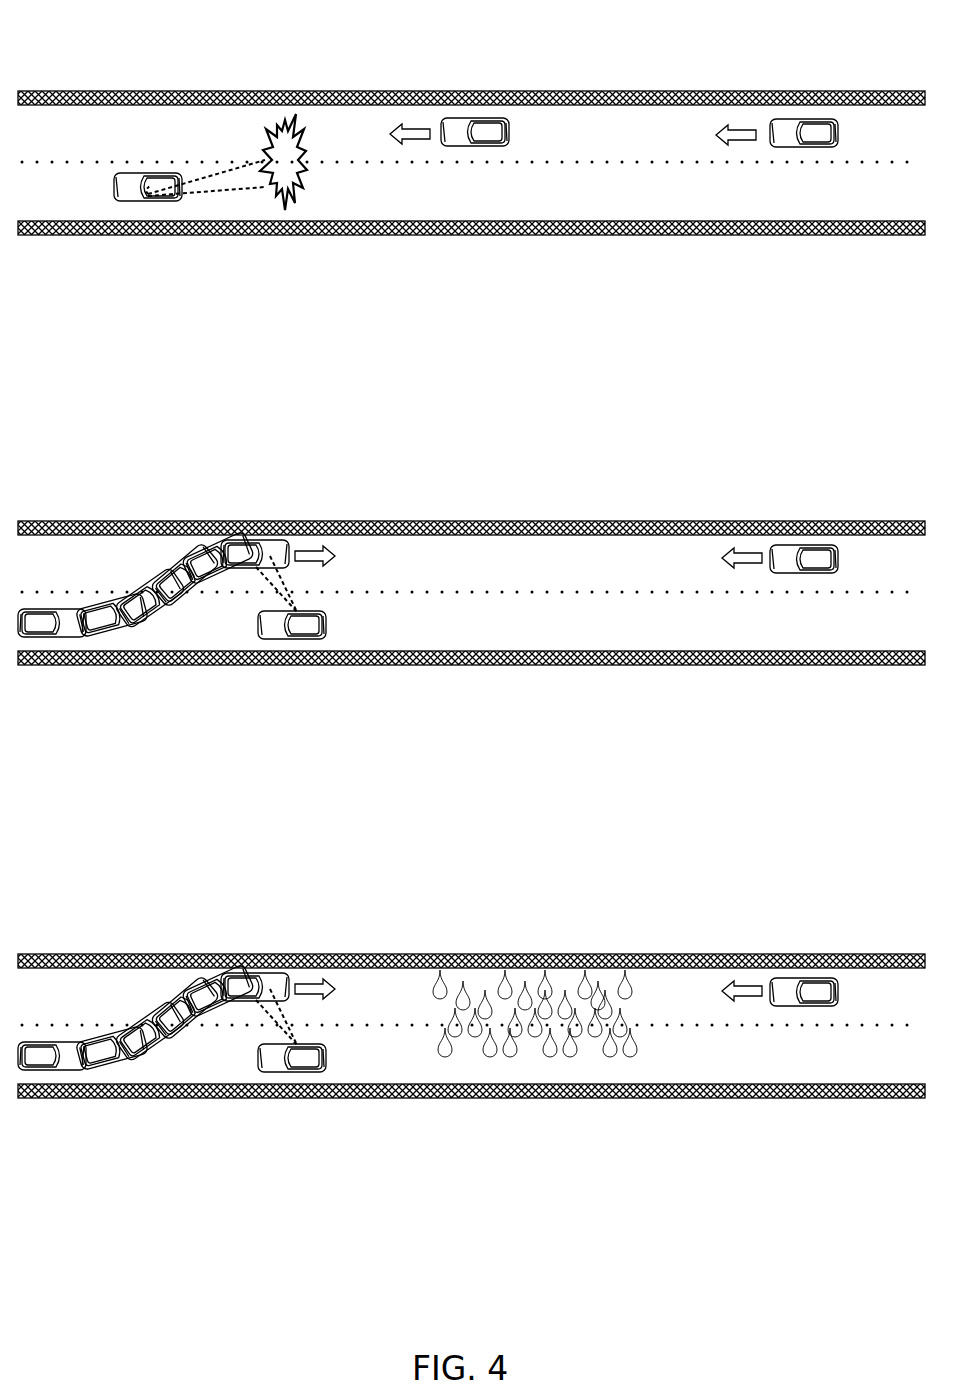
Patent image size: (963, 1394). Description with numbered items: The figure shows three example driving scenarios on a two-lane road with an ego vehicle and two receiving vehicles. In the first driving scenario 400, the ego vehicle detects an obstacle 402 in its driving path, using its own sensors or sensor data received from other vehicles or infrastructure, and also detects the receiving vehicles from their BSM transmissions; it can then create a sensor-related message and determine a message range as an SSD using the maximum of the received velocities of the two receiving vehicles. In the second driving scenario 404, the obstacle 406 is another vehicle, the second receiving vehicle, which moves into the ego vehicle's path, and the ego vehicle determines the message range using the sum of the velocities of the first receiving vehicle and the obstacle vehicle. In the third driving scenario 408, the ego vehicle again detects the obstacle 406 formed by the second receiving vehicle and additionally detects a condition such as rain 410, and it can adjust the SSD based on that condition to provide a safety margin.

The driving scenario 400 is at (770, 41).
The obstacle 402 is at (300, 106).
The driving scenario 404 is at (786, 469).
The obstacle 406 is at (253, 525).
The driving scenario 408 is at (786, 913).
The rain 410 is at (521, 960).